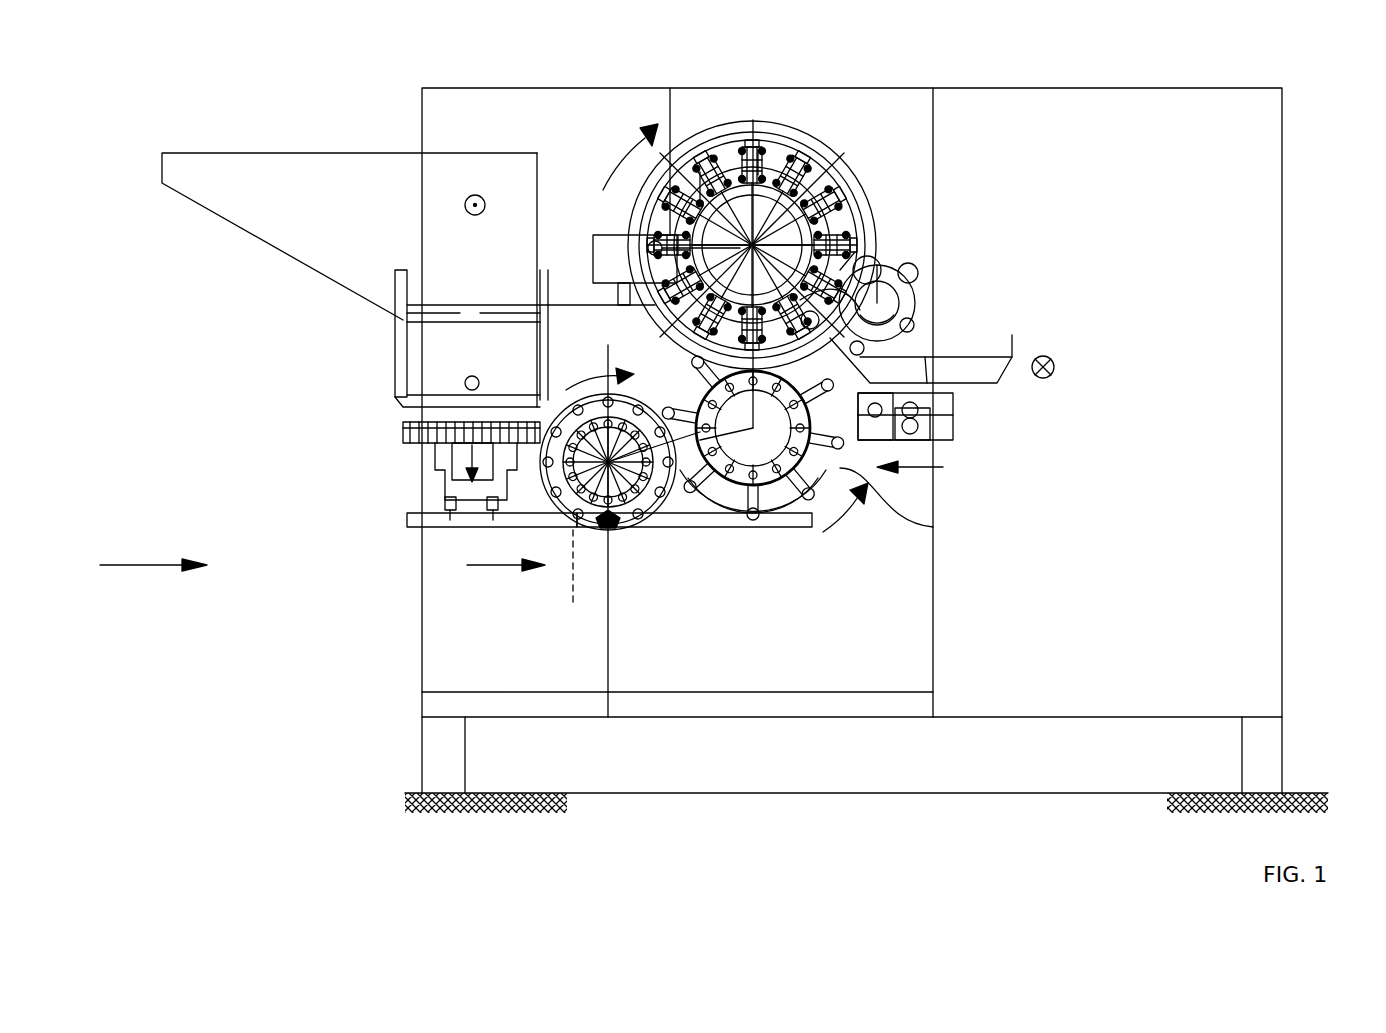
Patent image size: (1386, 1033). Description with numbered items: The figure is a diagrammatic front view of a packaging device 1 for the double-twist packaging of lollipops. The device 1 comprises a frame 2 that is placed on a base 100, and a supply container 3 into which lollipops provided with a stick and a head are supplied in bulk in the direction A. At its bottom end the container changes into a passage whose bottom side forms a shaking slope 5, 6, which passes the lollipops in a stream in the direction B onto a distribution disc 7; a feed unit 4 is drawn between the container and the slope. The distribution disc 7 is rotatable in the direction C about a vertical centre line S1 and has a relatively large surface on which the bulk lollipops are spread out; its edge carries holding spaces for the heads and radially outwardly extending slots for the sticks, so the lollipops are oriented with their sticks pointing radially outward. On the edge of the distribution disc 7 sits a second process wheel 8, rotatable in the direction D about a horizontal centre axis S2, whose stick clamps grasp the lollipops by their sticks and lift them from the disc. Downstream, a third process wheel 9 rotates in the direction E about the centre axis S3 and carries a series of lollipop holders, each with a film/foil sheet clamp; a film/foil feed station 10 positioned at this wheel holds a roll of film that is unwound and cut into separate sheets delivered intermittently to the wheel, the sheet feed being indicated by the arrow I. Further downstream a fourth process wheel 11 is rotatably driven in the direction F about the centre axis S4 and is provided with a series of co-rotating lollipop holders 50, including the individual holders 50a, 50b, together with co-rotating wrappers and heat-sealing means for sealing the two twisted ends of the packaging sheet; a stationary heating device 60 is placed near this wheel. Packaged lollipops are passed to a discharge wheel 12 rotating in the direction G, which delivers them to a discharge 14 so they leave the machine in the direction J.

The packaging device 1 is at (145, 565).
The frame 2 is at (447, 643).
The supply container 3 is at (346, 227).
The feed unit 4 is at (403, 352).
The shaking slope 5 is at (408, 434).
The shaking slope 6 is at (460, 468).
The distribution disc 7 is at (437, 520).
The second process wheel 8 is at (630, 417).
The third process wheel 9 is at (933, 527).
The film/foil feed station 10 is at (947, 422).
The fourth process wheel 11 is at (790, 135).
The discharge wheel 12 is at (897, 290).
The discharge 14 is at (1000, 381).
The lollipop holders 50 is at (735, 165).
The processing station 50a is at (700, 172).
The processing station 50b is at (758, 150).
The heating device 60 is at (607, 262).
The base 100 is at (1010, 831).
The vertical centre line S1 is at (579, 585).
The horizontal centre axis S2 is at (526, 497).
The centre axis S3 is at (711, 323).
The centre axis S4 is at (855, 252).
The supply direction A is at (487, 197).
The stream direction B is at (468, 455).
The rotation direction of distribution disc C is at (506, 553).
The rotation direction of second process wheel D is at (600, 366).
The rotation direction of third process wheel E is at (845, 515).
The rotation direction of fourth process wheel F is at (630, 157).
The rotation direction of discharge wheel G is at (905, 275).
The direction I is at (910, 478).
The discharge direction J is at (1053, 364).